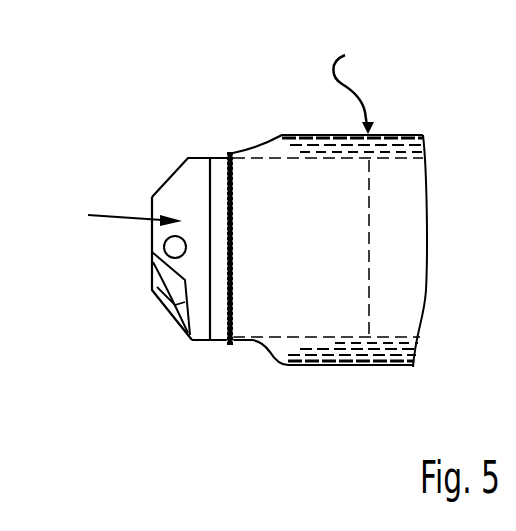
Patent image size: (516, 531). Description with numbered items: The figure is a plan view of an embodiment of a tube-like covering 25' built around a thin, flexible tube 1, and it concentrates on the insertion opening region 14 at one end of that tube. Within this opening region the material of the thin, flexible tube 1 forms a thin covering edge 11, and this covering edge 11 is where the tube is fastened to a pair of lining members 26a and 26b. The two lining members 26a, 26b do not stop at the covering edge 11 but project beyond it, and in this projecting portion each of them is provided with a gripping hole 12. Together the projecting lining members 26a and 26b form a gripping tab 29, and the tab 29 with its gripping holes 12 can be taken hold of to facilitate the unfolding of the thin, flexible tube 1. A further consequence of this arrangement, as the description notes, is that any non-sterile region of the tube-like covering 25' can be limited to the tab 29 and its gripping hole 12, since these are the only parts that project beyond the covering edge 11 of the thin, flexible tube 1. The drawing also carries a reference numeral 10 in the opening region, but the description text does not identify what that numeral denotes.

The thin, flexible tube 1 is at (327, 177).
The knurled clamping ring 10 is at (228, 188).
The thin covering edge 11 is at (209, 174).
The gripping hole 12 is at (164, 247).
The insertion opening region 14 is at (167, 309).
The tube-like covering 25' is at (370, 83).
The lining member 26a is at (152, 288).
The lining member 26b is at (172, 322).
The gripping tab 29 is at (88, 215).